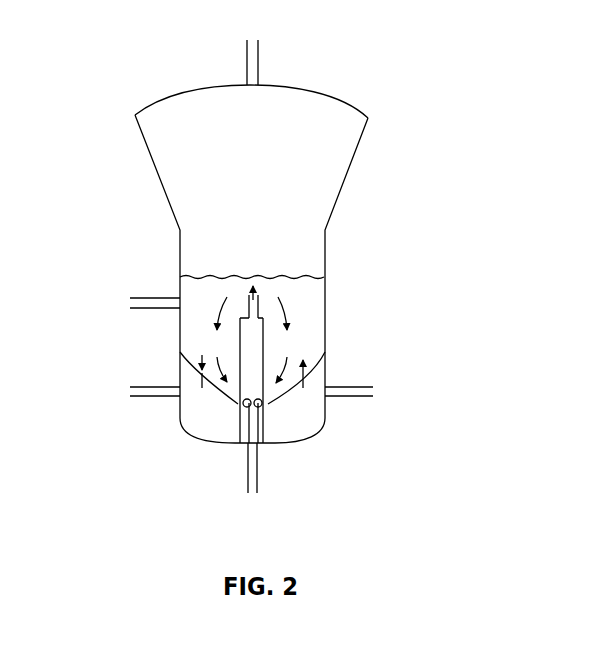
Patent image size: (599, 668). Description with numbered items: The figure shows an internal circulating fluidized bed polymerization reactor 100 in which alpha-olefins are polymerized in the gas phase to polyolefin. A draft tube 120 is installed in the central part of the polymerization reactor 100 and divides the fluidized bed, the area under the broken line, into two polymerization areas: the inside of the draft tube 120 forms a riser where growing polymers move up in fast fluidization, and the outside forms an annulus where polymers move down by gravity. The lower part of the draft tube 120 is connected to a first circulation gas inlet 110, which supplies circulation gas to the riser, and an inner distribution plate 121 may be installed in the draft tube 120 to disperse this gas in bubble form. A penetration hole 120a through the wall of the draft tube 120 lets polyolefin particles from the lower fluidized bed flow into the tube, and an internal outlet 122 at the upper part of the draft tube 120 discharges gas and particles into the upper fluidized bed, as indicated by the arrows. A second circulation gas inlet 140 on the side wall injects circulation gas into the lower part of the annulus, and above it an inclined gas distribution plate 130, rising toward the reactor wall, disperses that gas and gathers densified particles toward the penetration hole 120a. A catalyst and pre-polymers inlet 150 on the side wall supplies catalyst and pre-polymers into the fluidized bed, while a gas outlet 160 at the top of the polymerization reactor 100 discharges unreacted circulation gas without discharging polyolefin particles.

The internal circulating fluidized bed polymerization reactor 100 is at (392, 66).
The first circulation gas inlet 110 is at (246, 479).
The draft tube 120 is at (264, 338).
The penetration hole 120a is at (262, 406).
The inner distribution plate 121 is at (265, 447).
The internal outlet 122 is at (268, 309).
The gas distribution plate 130 is at (180, 350).
The second circulation gas inlet 140 is at (150, 387).
The catalyst and pre-polymers inlet 150 is at (138, 298).
The gas outlet 160 is at (245, 50).